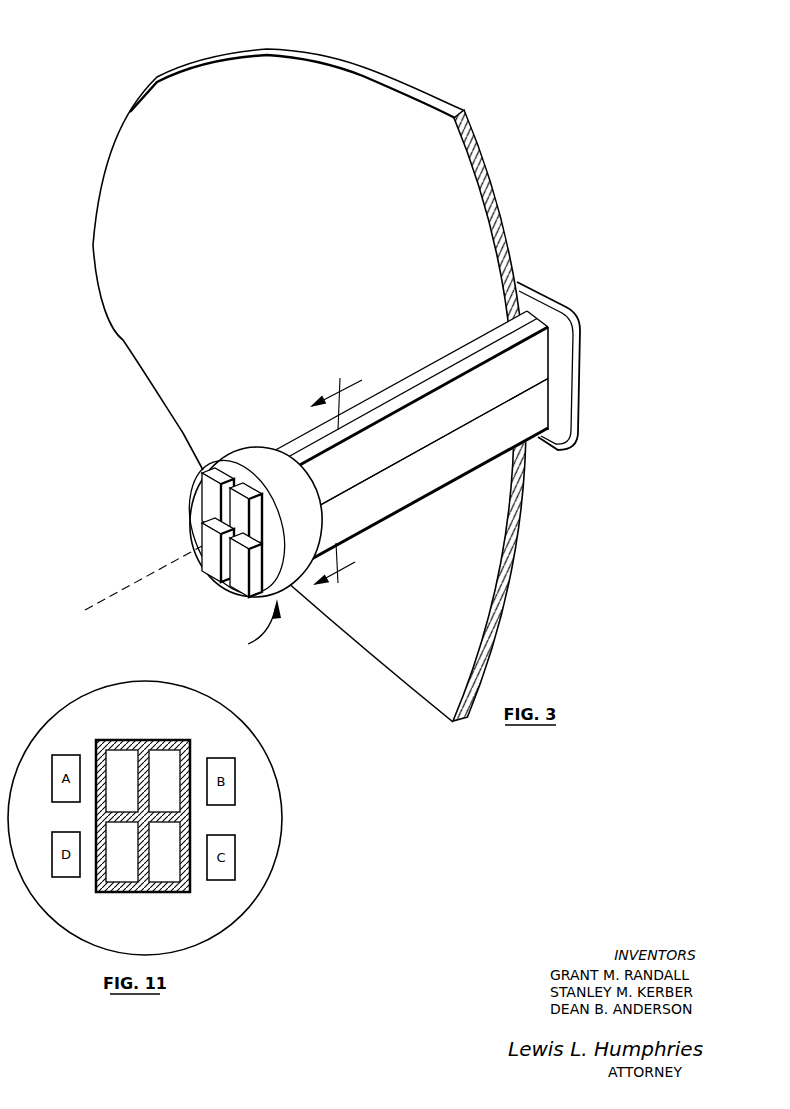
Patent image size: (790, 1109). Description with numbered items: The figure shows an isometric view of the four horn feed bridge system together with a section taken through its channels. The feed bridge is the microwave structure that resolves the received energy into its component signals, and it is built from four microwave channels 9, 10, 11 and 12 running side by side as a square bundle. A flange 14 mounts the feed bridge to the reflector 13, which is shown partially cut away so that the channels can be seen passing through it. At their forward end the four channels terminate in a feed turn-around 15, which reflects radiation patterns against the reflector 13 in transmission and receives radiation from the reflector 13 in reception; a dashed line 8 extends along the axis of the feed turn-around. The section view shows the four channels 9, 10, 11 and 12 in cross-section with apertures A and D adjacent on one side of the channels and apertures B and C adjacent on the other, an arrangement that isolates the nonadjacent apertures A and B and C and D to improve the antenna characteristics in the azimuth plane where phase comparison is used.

In FIG. 3, the boresight axis of horn antenna 8 is at (130, 583).
In FIG. 3, the microwave channel 9 is at (450, 356).
In FIG. 11, the microwave channel 9 is at (162, 739).
In FIG. 3, the microwave channel 10 is at (405, 432).
In FIG. 11, the microwave channel 10 is at (127, 739).
In FIG. 3, the microwave channel 11 is at (348, 588).
In FIG. 11, the microwave channel 11 is at (120, 893).
In FIG. 3, the microwave channel 12 is at (213, 571).
In FIG. 11, the microwave channel 12 is at (162, 893).
In FIG. 3, the reflector 13 is at (352, 364).
In FIG. 3, the flange 14 is at (576, 431).
In FIG. 3, the feed turn-around 15 is at (251, 628).